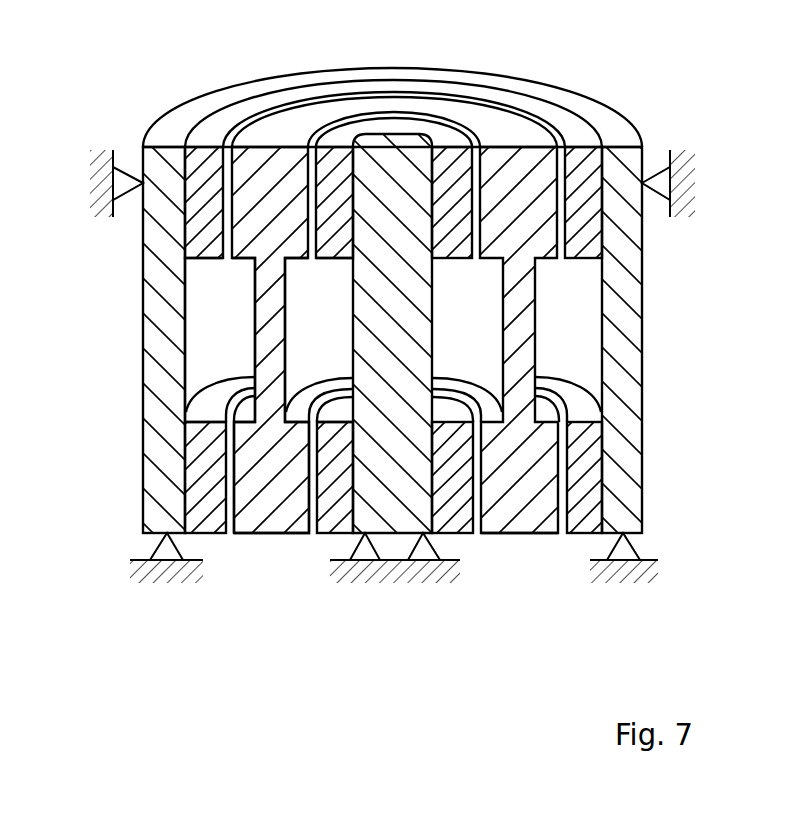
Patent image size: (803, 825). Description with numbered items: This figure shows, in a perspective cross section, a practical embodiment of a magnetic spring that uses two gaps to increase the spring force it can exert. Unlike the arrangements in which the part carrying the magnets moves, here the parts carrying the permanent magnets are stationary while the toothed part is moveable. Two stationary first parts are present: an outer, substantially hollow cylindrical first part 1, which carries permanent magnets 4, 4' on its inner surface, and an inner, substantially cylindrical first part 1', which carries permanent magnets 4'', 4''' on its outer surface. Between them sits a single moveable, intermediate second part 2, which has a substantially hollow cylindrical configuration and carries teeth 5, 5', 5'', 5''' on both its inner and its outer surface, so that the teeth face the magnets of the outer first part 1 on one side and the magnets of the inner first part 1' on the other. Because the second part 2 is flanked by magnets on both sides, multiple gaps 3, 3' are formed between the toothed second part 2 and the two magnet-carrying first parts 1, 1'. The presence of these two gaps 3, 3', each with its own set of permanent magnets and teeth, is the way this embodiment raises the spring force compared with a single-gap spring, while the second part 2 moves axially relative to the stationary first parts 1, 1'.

The first part 1 is at (395, 331).
The first part 1' is at (395, 373).
The second part 2 is at (256, 533).
The gap 3 is at (394, 297).
The gap 3' is at (394, 78).
The permanent magnet 4 is at (193, 150).
The permanent magnet 4' is at (214, 530).
The permanent magnet 4'' is at (353, 142).
The permanent magnet 4''' is at (326, 535).
The tooth 5 is at (220, 326).
The tooth 5' is at (236, 391).
The tooth 5'' is at (319, 326).
The tooth 5''' is at (324, 392).